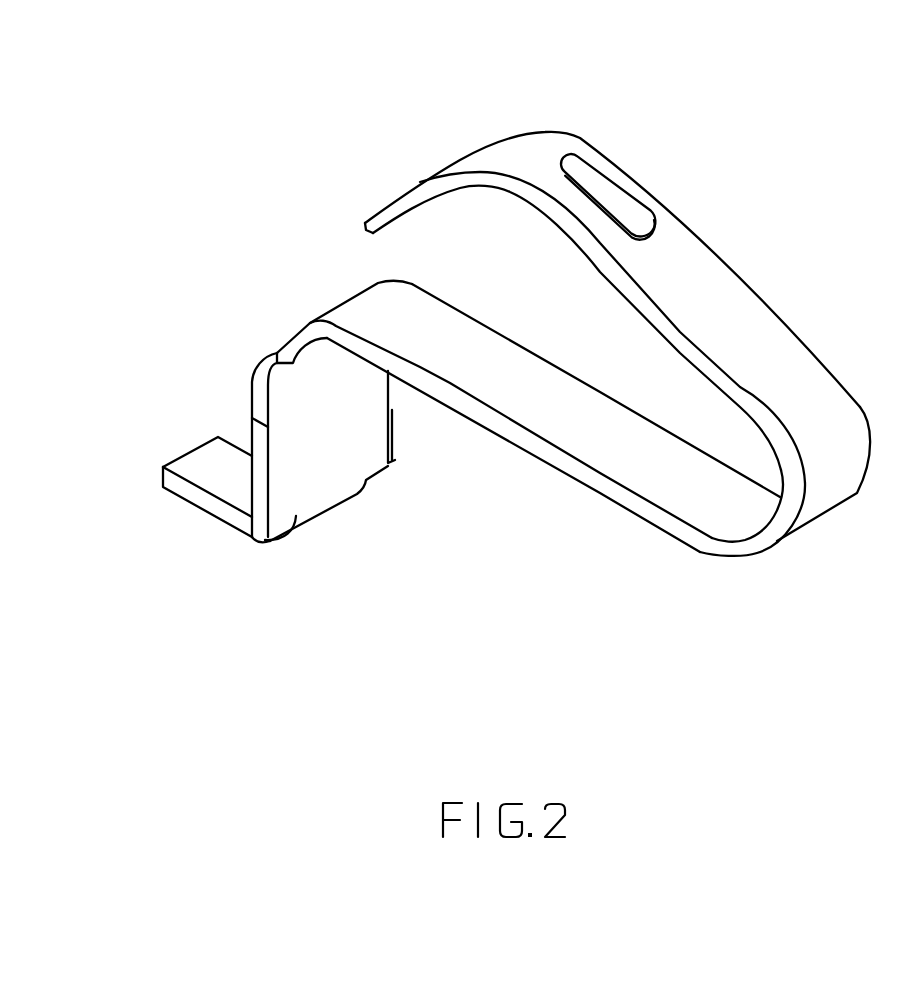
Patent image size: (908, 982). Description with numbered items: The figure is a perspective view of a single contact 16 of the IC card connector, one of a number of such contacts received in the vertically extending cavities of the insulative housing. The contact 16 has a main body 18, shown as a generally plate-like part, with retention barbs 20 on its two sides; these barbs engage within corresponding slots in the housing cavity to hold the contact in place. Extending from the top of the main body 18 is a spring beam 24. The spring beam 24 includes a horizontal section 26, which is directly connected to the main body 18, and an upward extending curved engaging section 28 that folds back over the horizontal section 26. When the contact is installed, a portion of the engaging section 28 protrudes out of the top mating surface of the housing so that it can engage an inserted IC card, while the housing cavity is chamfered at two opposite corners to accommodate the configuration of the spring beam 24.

The contact 16 is at (248, 115).
The main body 18 is at (330, 473).
The retention barbs 20 is at (260, 472).
The spring beam 24 is at (647, 532).
The horizontal section 26 is at (580, 447).
The engaging section 28 is at (713, 278).